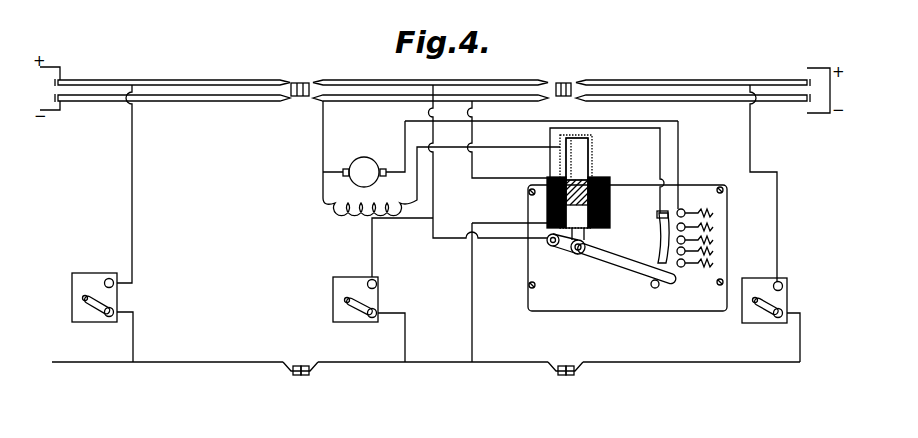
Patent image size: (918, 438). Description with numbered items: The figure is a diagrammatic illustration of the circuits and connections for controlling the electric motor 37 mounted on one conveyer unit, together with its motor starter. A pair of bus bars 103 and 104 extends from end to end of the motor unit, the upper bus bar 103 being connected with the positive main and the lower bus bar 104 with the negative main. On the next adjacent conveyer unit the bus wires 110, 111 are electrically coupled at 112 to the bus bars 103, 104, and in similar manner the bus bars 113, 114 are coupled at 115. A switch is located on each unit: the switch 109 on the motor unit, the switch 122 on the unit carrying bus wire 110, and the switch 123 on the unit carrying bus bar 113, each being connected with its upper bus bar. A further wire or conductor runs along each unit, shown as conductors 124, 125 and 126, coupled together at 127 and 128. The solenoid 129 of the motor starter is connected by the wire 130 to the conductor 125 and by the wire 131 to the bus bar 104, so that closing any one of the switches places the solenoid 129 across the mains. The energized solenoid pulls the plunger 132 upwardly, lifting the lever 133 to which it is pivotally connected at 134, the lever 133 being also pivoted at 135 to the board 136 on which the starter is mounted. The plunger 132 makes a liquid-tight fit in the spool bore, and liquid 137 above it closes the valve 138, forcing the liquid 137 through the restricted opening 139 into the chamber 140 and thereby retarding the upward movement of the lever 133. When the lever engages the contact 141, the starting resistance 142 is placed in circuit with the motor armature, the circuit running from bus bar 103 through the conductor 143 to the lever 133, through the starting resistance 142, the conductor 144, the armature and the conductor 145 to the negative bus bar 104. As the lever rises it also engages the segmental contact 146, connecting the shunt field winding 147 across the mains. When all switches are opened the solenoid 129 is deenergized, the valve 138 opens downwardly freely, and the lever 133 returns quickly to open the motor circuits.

The motor 37 is at (363, 157).
The bus bar 103 is at (354, 78).
The bus bar 104 is at (384, 96).
The switch 109 is at (350, 277).
The bus wire 110 is at (172, 82).
The bus wire 111 is at (172, 101).
The coupling 112 is at (299, 83).
The bus bar 113 is at (655, 81).
The bus bar 114 is at (664, 97).
The coupling 115 is at (564, 83).
The switch 122 is at (90, 274).
The switch 123 is at (766, 286).
The wire or conductor 124 is at (184, 362).
The wire or conductor 125 is at (366, 364).
The wire or conductor 126 is at (625, 365).
The coupling 127 is at (299, 378).
The coupling 128 is at (565, 376).
The solenoid 129 is at (658, 228).
The wire 130 is at (472, 329).
The wire 131 is at (472, 165).
The plunger 132 is at (609, 181).
The lever 133 is at (627, 262).
The pivot 134 is at (578, 255).
The pivot 135 is at (553, 247).
The board 136 is at (544, 312).
The liquid 137 is at (586, 185).
The valve 138 is at (560, 166).
The restricted opening 139 is at (574, 175).
The chamber 140 is at (560, 141).
The contact 141 is at (685, 266).
The starting resistance 142 is at (718, 250).
The conductor 143 is at (433, 190).
The conductor 144 is at (679, 150).
The conductor 145 is at (323, 146).
The segmental contact 146 is at (658, 218).
The shunt field winding 147 is at (355, 206).